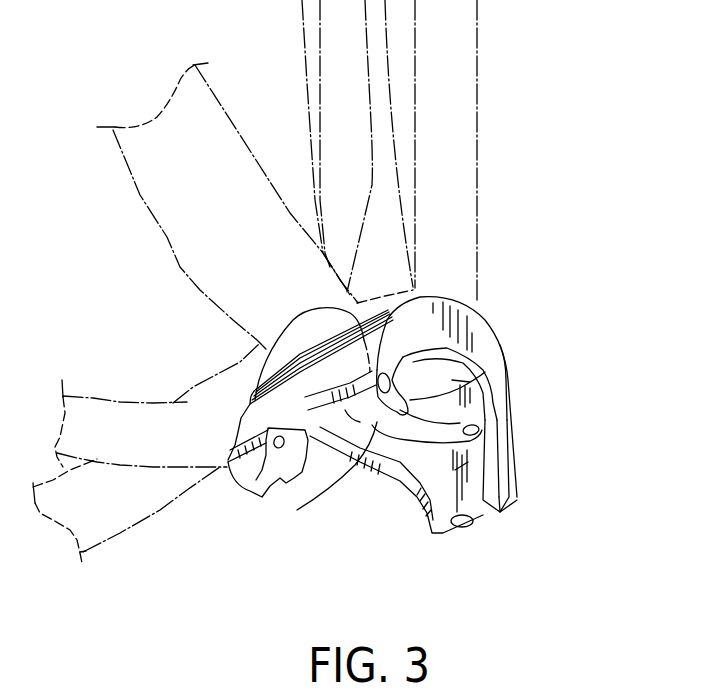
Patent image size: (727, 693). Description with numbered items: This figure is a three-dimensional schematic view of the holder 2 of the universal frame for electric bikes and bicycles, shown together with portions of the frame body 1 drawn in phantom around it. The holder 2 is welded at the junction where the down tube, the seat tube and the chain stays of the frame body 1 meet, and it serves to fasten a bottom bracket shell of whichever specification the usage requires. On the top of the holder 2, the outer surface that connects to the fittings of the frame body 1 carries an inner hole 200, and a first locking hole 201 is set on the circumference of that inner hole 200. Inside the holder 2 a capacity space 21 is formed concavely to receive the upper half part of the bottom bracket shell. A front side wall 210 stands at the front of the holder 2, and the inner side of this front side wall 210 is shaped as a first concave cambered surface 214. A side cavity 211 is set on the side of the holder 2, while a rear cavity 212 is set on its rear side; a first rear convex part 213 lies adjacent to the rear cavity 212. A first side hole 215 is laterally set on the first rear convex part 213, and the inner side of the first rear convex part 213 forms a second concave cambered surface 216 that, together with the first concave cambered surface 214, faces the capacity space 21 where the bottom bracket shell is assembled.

The frame body 1 is at (477, 118).
The holder 2 is at (498, 325).
The capacity space 21 is at (400, 460).
The inner hole 200 is at (456, 383).
The first locking hole 201 is at (486, 436).
The front side wall 210 is at (457, 475).
The side cavity 211 is at (498, 360).
The rear cavity 212 is at (306, 417).
The first rear convex part 213 is at (353, 412).
The first concave cambered surface 214 is at (458, 525).
The first side hole 215 is at (337, 418).
The second concave cambered surface 216 is at (263, 495).